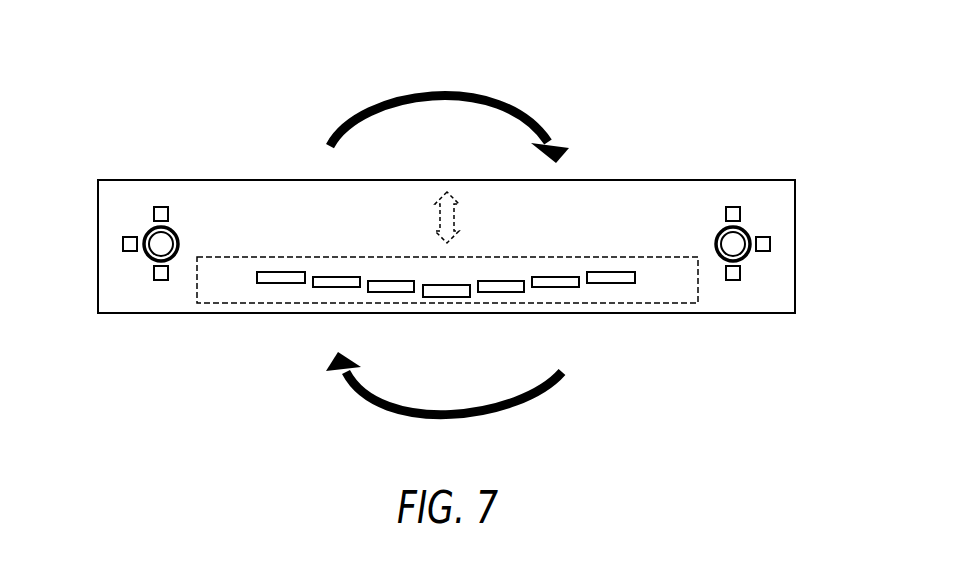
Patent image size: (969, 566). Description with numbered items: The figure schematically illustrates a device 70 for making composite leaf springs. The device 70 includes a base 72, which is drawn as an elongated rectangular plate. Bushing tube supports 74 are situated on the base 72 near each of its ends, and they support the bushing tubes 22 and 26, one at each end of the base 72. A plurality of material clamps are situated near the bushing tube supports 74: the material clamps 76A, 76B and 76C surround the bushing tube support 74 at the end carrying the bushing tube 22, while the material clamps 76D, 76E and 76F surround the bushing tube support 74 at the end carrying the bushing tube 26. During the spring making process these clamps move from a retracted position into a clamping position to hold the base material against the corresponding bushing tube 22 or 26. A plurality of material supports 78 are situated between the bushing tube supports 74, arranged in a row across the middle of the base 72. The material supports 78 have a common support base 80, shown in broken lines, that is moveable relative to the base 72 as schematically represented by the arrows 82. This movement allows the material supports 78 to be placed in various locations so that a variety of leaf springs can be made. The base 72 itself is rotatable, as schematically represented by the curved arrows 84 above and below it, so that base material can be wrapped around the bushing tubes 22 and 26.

The device 70 is at (190, 47).
The base 72 is at (763, 180).
The bushing tube supports 74 is at (161, 244).
The bushing tube 22 is at (150, 230).
The bushing tube 26 is at (744, 230).
The material clamp 76A is at (161, 206).
The material clamp 76B is at (122, 246).
The material clamp 76C is at (161, 281).
The material clamp 76D is at (733, 281).
The material clamp 76E is at (771, 246).
The material clamp 76F is at (733, 206).
The material supports 78 is at (282, 279).
The common support base 80 is at (658, 303).
The arrows 82 is at (455, 218).
The arrows 84 is at (497, 100).